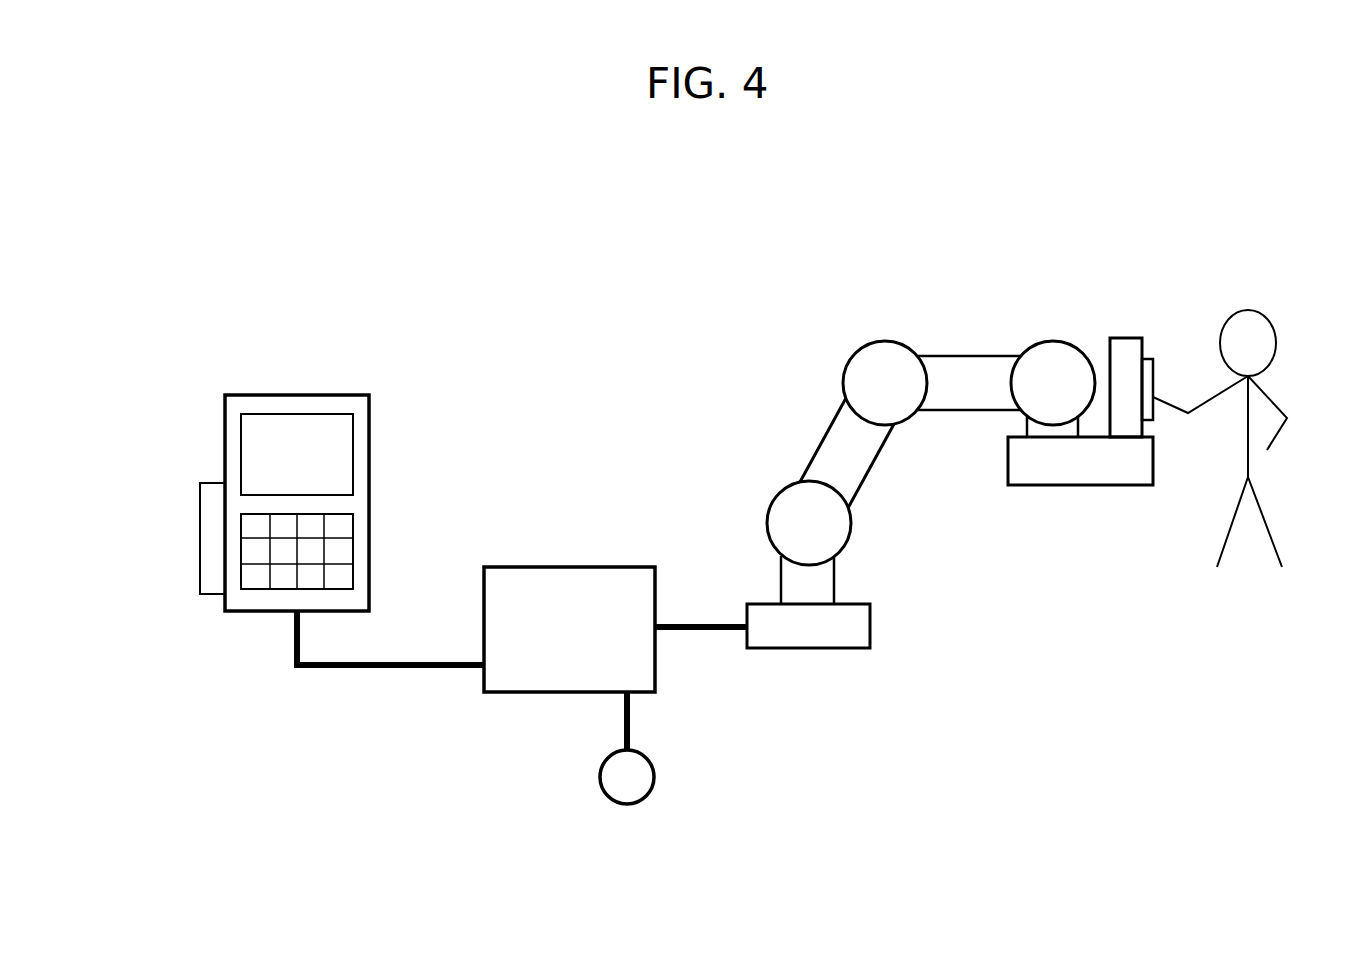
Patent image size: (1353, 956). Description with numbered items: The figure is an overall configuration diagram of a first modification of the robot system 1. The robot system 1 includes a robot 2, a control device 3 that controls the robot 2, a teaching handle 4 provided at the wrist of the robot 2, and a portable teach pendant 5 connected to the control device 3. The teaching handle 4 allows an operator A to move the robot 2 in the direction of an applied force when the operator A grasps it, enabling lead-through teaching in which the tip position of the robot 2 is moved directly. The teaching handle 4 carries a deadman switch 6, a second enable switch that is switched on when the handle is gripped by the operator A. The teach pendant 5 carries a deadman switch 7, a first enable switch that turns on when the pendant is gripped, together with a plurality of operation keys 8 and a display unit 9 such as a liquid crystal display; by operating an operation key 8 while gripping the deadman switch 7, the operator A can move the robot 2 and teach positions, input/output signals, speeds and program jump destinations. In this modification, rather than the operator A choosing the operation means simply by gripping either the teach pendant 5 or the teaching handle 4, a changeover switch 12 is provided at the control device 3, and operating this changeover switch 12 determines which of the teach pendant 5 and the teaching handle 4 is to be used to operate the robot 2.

The robot system 1 is at (651, 312).
The robot 2 is at (812, 420).
The control device 3 is at (564, 548).
The teaching handle 4 is at (1123, 318).
The teach pendant 5 is at (296, 376).
The deadman switch 6 is at (1150, 368).
The deadman switch 7 is at (198, 533).
The operation keys 8 is at (336, 550).
The display unit 9 is at (332, 450).
The changeover switch 12 is at (655, 773).
The operator A is at (1248, 310).